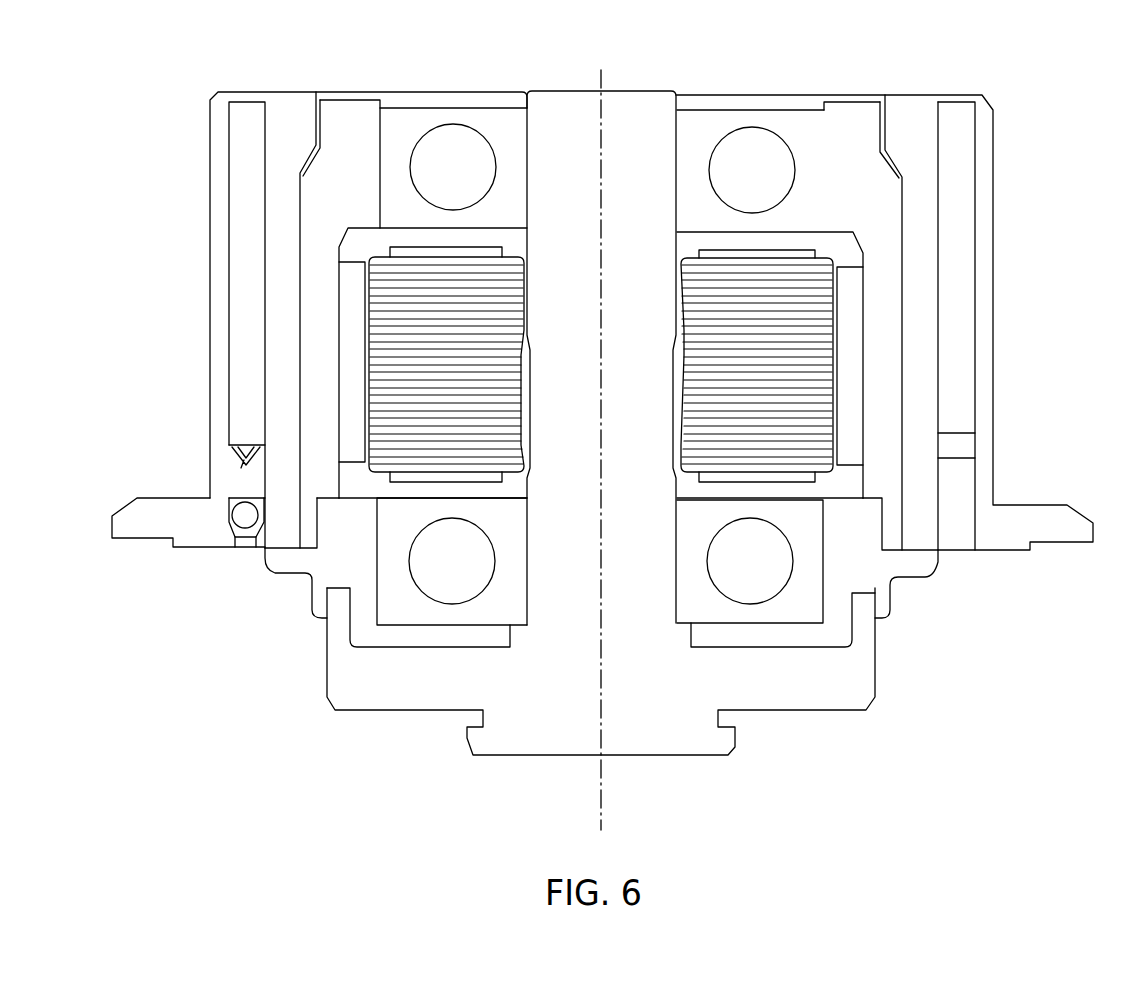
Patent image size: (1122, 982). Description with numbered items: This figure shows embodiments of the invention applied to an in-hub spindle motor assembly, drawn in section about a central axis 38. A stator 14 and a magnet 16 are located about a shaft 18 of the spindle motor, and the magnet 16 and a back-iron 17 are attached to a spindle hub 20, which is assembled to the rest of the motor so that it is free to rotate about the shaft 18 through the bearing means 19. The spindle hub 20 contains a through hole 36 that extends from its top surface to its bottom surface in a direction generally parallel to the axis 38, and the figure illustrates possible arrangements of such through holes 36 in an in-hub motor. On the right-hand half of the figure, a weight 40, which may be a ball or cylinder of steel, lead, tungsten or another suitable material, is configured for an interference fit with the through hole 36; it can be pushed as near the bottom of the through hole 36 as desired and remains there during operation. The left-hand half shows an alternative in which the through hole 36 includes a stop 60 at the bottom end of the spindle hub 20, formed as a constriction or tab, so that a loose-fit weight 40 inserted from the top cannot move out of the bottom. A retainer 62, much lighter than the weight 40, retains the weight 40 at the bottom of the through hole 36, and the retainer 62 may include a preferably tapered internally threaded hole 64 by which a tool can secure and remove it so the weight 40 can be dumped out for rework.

The stator 14 is at (815, 340).
The magnet 16 is at (850, 303).
The back-iron 17 is at (885, 268).
The shaft 18 is at (620, 520).
The bearing means 19 is at (497, 127).
The spindle hub 20 is at (902, 125).
The through hole 36 is at (263, 342).
The axis 38 is at (600, 797).
The weight 40 is at (242, 527).
The stop 60 is at (233, 528).
The retainer 62 is at (238, 487).
The internally threaded hole 64 is at (228, 447).